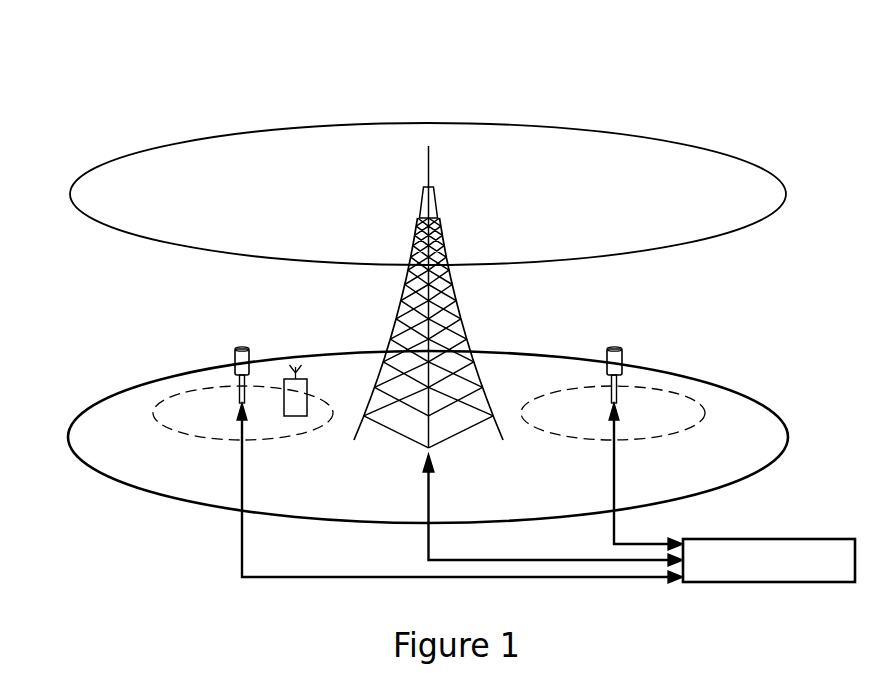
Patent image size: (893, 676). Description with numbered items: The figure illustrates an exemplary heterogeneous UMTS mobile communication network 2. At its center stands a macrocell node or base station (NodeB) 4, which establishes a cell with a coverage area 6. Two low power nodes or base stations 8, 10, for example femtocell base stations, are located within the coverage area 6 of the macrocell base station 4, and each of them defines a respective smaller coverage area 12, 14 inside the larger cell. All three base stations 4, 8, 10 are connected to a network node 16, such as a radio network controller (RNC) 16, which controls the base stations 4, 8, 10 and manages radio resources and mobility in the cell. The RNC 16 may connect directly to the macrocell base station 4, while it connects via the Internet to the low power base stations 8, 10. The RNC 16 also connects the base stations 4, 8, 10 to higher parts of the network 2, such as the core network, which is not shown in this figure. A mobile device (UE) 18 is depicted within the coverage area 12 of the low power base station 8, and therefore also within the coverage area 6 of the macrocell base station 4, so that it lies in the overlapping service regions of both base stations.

The heterogeneous UMTS mobile communication network 2 is at (130, 109).
The macrocell node/base station (NodeB) 4 is at (398, 304).
The coverage area 6 is at (101, 478).
The low power node/base station 8 is at (234, 348).
The low power node/base station 10 is at (623, 357).
The coverage area 12 is at (152, 413).
The coverage area 14 is at (703, 414).
The network node (radio network controller, RNC) 16 is at (828, 539).
The mobile device (UE) 18 is at (295, 390).